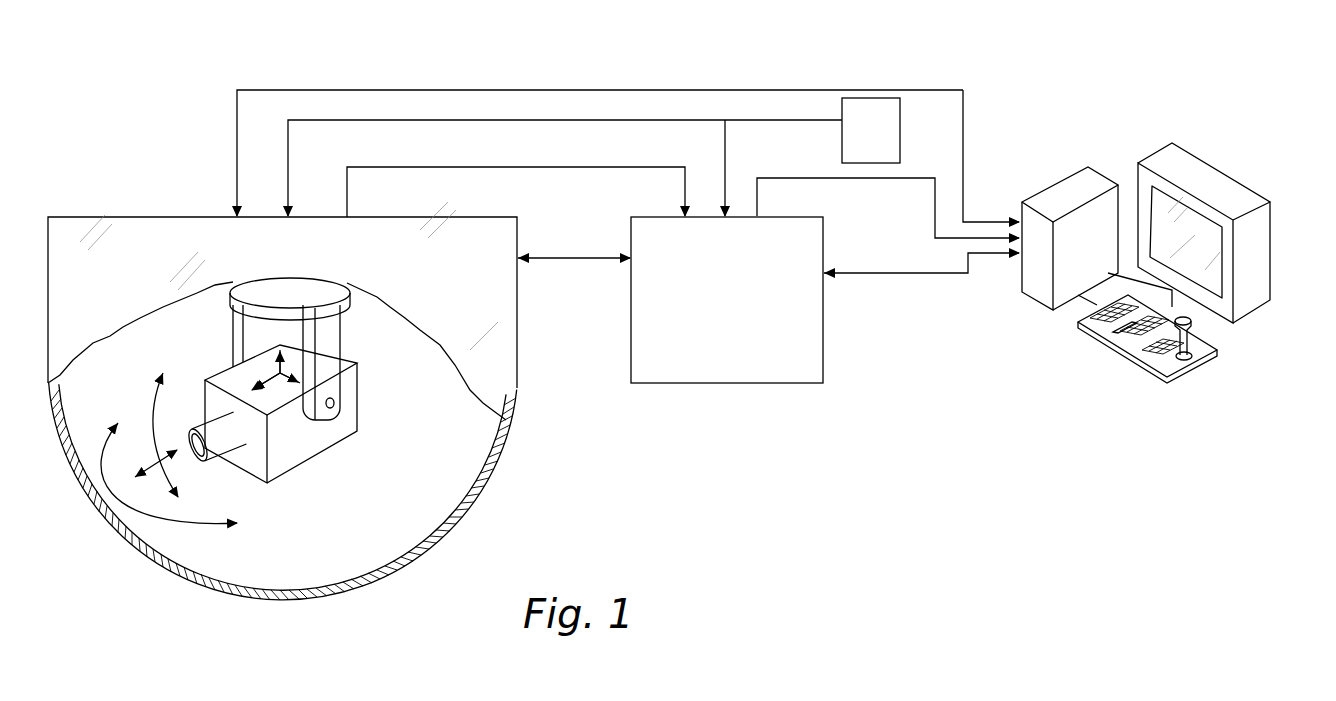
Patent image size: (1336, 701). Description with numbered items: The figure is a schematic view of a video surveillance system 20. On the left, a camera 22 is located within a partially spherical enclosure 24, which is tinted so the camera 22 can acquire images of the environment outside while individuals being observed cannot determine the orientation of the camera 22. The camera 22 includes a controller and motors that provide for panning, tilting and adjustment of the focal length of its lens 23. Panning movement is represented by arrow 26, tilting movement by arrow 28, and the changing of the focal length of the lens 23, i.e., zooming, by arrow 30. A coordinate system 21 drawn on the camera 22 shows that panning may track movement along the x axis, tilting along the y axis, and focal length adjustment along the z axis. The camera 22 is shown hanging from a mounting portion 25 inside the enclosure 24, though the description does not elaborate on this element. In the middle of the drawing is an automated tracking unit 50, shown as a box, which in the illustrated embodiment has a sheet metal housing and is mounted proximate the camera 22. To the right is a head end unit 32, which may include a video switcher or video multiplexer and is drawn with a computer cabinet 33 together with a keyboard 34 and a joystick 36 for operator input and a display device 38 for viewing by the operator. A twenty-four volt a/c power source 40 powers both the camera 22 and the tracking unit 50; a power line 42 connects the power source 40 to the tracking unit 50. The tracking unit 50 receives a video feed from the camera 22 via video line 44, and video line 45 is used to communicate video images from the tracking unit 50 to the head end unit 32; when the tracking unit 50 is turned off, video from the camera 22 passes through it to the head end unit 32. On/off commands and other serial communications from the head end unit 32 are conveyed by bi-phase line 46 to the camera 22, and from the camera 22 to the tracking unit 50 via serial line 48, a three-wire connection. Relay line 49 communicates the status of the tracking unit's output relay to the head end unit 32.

The video surveillance system 20 is at (506, 48).
The coordinate system 21 is at (270, 457).
The camera 22 is at (307, 447).
The lens 23 is at (187, 423).
The partially spherical enclosure 24 is at (500, 401).
The mount 25 is at (263, 293).
The arrow 26 is at (162, 525).
The arrow 28 is at (157, 378).
The arrow 30 is at (178, 453).
The head end unit 32 is at (1054, 440).
The computer 33 is at (1062, 180).
The keyboard 34 is at (1095, 340).
The joystick 36 is at (1210, 365).
The display device 38 is at (1228, 268).
The power source 40 is at (882, 97).
The power line 42 is at (705, 119).
The video line 44 is at (540, 167).
The video line 45 is at (899, 180).
The bi-phase line 46 is at (565, 90).
The RS-232 serial line 48 is at (567, 261).
The relay line 49 is at (881, 276).
The automated tracking unit 50 is at (824, 372).